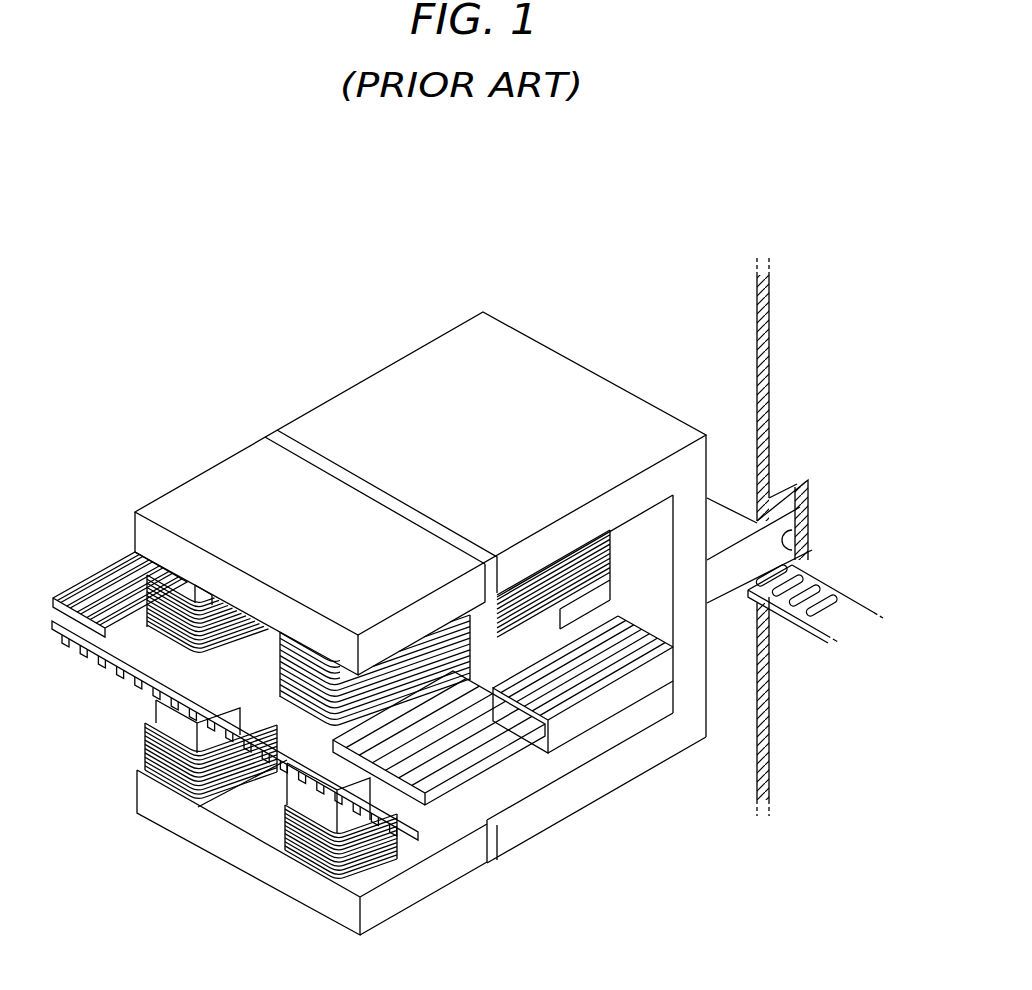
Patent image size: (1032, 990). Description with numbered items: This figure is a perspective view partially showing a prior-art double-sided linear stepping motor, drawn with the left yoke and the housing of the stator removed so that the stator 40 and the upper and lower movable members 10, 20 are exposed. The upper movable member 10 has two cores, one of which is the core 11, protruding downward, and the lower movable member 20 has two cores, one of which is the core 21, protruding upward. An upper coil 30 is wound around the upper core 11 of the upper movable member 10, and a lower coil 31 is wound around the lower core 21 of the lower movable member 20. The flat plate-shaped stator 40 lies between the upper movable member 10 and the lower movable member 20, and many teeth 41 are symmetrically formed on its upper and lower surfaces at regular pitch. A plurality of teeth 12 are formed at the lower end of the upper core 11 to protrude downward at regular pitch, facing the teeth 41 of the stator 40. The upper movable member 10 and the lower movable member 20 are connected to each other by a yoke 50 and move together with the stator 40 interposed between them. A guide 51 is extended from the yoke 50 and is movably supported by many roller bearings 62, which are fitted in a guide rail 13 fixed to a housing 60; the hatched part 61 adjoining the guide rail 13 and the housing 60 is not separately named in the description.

The upper movable member 10 is at (370, 393).
The core 11 is at (137, 560).
The teeth 12 is at (312, 735).
The guide rail 13 is at (823, 583).
The lower movable member 20 is at (400, 903).
The core 21 is at (167, 717).
The upper coil 30 is at (135, 603).
The lower coil 31 is at (173, 773).
The stator 40 is at (567, 728).
The teeth 41 is at (423, 793).
The yoke 50 is at (698, 702).
The guide 51 is at (782, 552).
The housing 60 is at (763, 417).
The bracket 61 is at (800, 545).
The roller bearings 62 is at (813, 623).